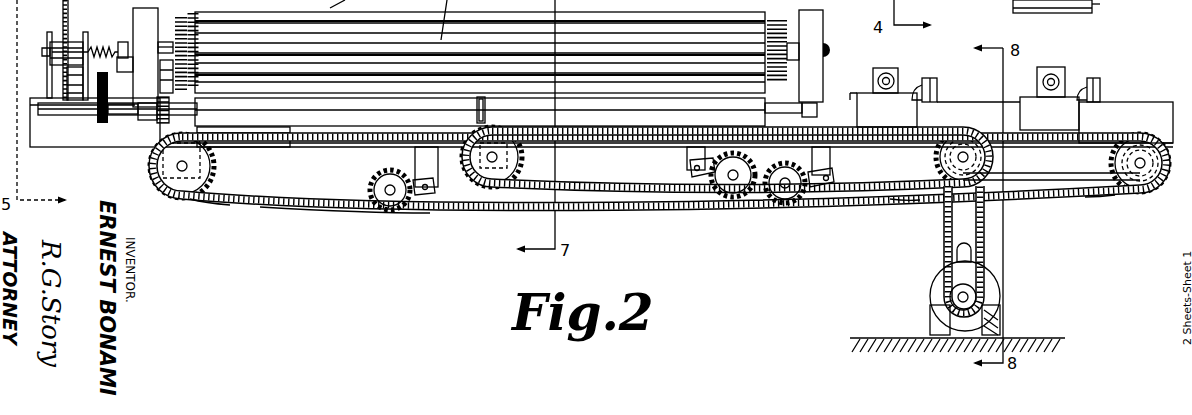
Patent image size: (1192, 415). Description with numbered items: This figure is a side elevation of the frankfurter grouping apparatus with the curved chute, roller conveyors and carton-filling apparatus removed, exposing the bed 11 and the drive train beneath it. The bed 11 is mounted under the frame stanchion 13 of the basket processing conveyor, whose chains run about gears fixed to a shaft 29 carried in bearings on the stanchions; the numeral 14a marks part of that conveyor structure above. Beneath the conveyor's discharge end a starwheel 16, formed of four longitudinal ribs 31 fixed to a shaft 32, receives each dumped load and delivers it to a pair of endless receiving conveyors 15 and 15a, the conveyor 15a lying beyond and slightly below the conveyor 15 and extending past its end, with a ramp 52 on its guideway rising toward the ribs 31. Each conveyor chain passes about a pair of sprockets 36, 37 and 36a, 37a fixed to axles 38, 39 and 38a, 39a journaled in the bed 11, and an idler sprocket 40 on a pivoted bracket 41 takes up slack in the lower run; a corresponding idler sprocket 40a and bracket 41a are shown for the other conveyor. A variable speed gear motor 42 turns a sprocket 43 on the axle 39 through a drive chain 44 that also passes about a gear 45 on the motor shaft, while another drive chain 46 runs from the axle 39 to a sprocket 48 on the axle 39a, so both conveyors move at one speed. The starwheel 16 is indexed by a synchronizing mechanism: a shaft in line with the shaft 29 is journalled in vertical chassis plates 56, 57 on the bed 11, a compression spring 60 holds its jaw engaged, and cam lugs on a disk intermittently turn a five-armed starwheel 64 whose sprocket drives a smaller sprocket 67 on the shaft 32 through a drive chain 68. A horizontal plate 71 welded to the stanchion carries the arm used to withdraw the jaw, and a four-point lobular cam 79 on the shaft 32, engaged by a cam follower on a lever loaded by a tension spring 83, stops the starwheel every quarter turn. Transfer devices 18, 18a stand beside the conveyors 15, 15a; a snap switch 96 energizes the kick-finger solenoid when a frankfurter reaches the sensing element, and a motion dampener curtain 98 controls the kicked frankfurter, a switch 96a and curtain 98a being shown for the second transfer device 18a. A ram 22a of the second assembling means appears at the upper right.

The bed 11 is at (40, 152).
The frame stanchion 13 is at (820, 30).
The upper member 14a is at (1104, 8).
The receiving conveyor 15 is at (627, 212).
The receiving conveyor 15a is at (311, 214).
The starwheel 16 is at (349, 120).
The transfer device 18 is at (893, 62).
The transfer device 18a is at (1058, 62).
The ram 22a is at (1100, 6).
The shaft 29 is at (831, 50).
The longitudinal rib 31 is at (297, 148).
The shaft 32 is at (127, 124).
The sprocket 36 is at (520, 160).
The sprocket 36a is at (216, 202).
The sprocket 37 is at (940, 152).
The sprocket 37a is at (1115, 160).
The axle 38 is at (184, 198).
The axle 38a is at (490, 188).
The axle 39 is at (951, 167).
The axle 39a is at (1140, 190).
The idler sprocket 40 is at (733, 205).
The gear 40a is at (373, 175).
The bracket 41 is at (695, 200).
The bracket 41a is at (418, 212).
The variable speed gear motor 42 is at (1002, 294).
The sprocket 43 is at (920, 207).
The drive chain 44 is at (986, 233).
The gear 45 is at (950, 290).
The drive chain 46 is at (1048, 172).
The sprocket 48 is at (1100, 206).
The ramp 52 is at (235, 148).
The vertical chassis plate 56 is at (45, 33).
The vertical chassis plate 57 is at (80, 30).
The compression spring 60 is at (96, 45).
The starwheel 64 is at (75, 104).
The sprocket 67 is at (112, 122).
The drive chain 68 is at (100, 112).
The horizontal plate 71 is at (123, 73).
The lobular cam 79 is at (160, 128).
The tension spring 83 is at (153, 67).
The snap switch 96 is at (937, 85).
The bracket 96a is at (1100, 90).
The motion dampener curtain 98 is at (898, 118).
The box 98a is at (1076, 123).